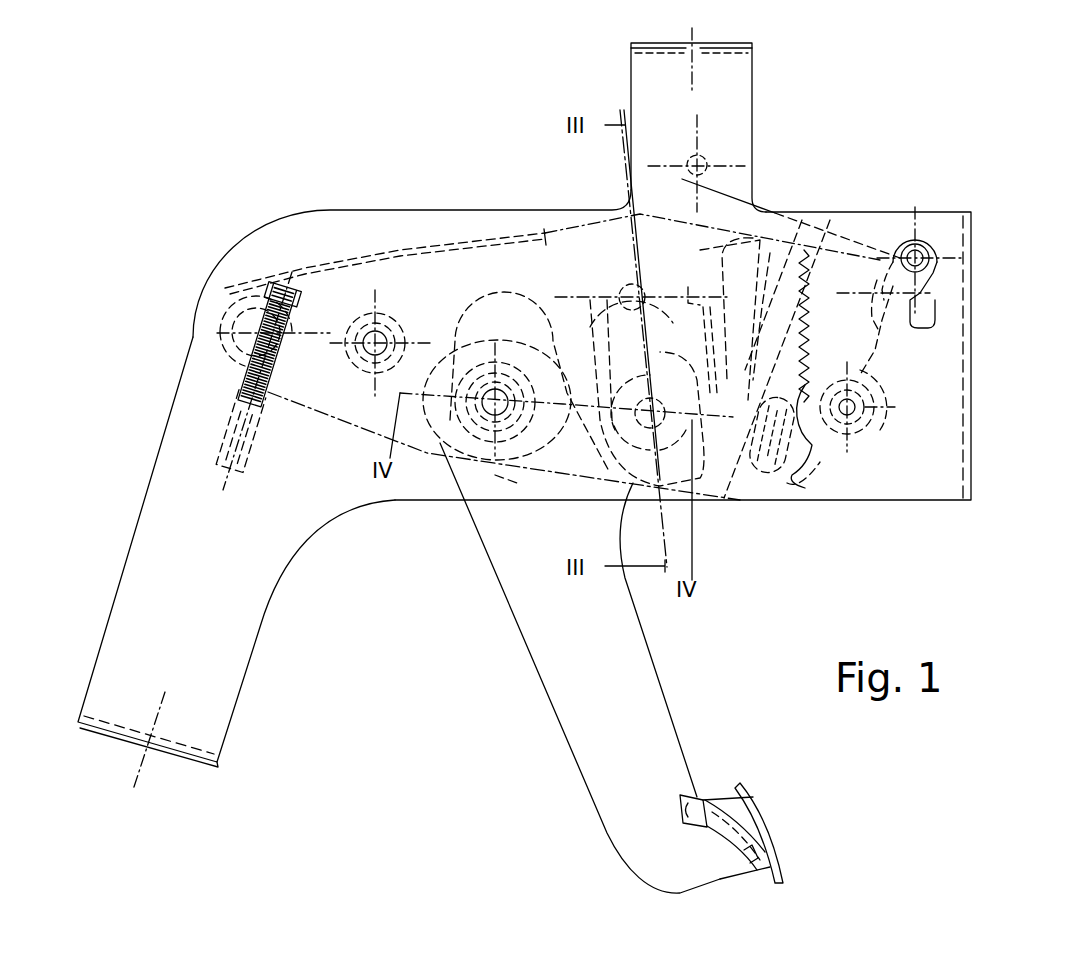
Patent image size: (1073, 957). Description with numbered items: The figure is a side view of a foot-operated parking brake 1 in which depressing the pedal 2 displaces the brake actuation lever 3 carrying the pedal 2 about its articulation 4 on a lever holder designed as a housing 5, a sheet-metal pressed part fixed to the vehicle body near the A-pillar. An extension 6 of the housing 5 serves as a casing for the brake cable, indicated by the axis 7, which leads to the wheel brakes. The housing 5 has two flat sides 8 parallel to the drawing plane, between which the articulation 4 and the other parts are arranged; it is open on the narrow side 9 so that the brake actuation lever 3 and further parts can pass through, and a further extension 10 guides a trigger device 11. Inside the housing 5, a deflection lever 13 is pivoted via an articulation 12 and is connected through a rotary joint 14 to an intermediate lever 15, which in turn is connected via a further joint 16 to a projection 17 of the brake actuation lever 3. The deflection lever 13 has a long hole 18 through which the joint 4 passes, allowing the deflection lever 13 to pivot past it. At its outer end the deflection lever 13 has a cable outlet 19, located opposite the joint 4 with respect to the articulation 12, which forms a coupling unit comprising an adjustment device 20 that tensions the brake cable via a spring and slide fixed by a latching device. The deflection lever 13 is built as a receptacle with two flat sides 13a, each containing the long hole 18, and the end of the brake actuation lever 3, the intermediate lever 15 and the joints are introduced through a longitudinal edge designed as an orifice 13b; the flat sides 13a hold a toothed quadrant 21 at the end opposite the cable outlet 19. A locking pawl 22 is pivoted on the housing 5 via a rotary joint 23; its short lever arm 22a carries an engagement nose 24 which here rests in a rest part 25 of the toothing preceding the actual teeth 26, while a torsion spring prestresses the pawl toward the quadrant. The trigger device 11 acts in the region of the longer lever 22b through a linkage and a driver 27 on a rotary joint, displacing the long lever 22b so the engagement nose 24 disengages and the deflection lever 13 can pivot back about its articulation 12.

The parking brake 1 is at (380, 153).
The pedal 2 is at (747, 790).
The brake actuation lever 3 is at (577, 683).
The articulation 4 is at (505, 418).
The housing 5 is at (526, 209).
The extension 6 is at (188, 636).
The axis 7 is at (224, 495).
The flat sides 8 is at (945, 482).
The narrow side 9 is at (672, 507).
The further extension 10 is at (742, 82).
The trigger device 11 is at (921, 333).
The articulation 12 is at (365, 355).
The deflection lever 13 is at (300, 398).
The flat sides 13a is at (456, 309).
The orifice 13b is at (495, 482).
The rotary joint 14 is at (630, 297).
The intermediate lever 15 is at (683, 277).
The joint 16 is at (655, 408).
The projection 17 is at (620, 462).
The long hole 18 is at (510, 292).
The cable outlet 19 is at (292, 303).
The adjustment device 20 is at (236, 403).
The toothed quadrant 21 is at (788, 467).
The locking pawl 22 is at (812, 455).
The short lever arm 22a is at (848, 452).
The long lever 22b is at (875, 340).
The rotary joint 23 is at (862, 407).
The engagement nose 24 is at (790, 470).
The rest part 25 is at (790, 190).
The teeth 26 is at (918, 256).
The driver 27 is at (923, 303).